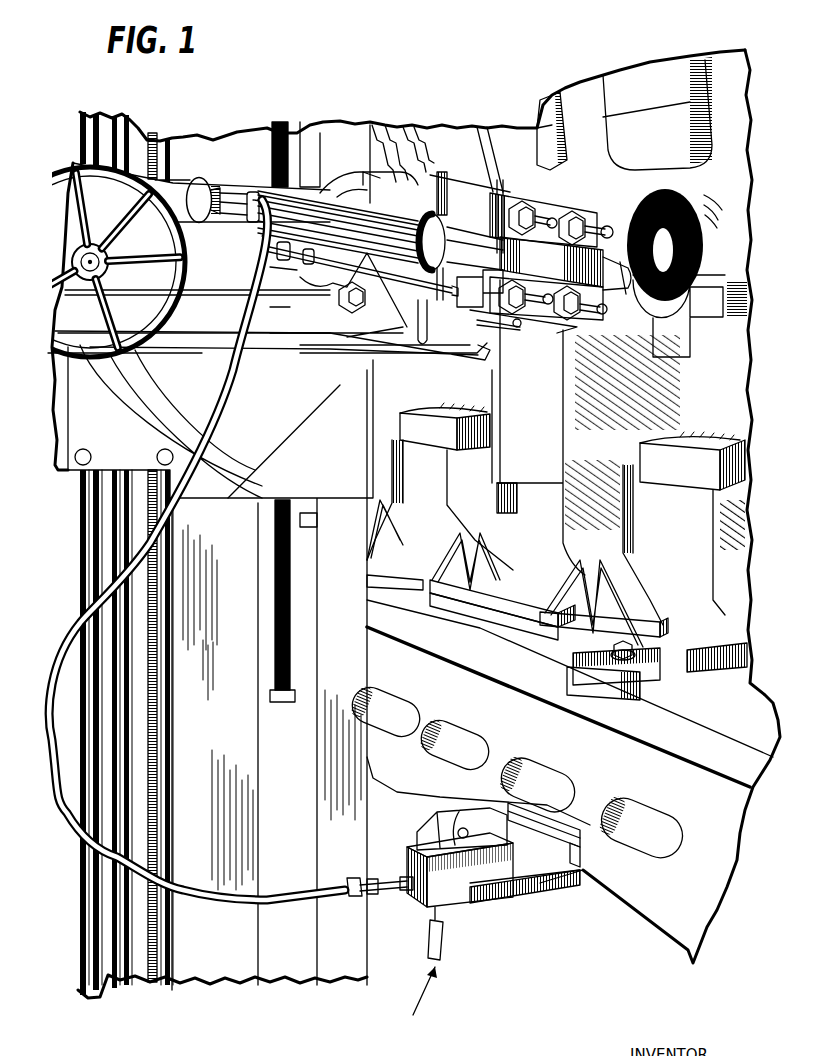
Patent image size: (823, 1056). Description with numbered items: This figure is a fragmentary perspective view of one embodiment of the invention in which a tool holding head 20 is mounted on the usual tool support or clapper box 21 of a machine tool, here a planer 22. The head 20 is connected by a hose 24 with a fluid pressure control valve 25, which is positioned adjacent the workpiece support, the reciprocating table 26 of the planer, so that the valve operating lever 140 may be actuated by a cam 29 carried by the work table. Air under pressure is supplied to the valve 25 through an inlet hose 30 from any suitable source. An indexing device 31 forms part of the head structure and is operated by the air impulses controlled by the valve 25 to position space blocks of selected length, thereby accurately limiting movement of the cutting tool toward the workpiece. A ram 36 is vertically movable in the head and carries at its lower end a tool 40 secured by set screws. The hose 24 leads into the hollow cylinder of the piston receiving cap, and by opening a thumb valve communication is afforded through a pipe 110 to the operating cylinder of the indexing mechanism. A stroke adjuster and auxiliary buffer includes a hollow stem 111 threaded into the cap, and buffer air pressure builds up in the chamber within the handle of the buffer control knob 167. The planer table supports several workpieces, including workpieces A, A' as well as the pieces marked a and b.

The head 20 is at (510, 196).
The clapper box 21 is at (407, 192).
The planer 22 is at (354, 685).
The hose 24 is at (65, 818).
The fluid pressure control valve 25 is at (425, 908).
The reciprocating table 26 is at (690, 917).
The cam 29 is at (575, 862).
The inlet hose 30 is at (445, 950).
The indexing device 31 is at (453, 307).
The ram 36 is at (613, 272).
The tool 40 is at (633, 282).
The pipe 110 is at (420, 286).
The hollow stem 111 is at (229, 197).
The valve operating lever 140 is at (427, 820).
The buffer control knob 167 is at (212, 180).
The workpiece a is at (640, 207).
The workpiece b is at (707, 327).
The workpiece A is at (440, 472).
The workpiece A' is at (685, 534).